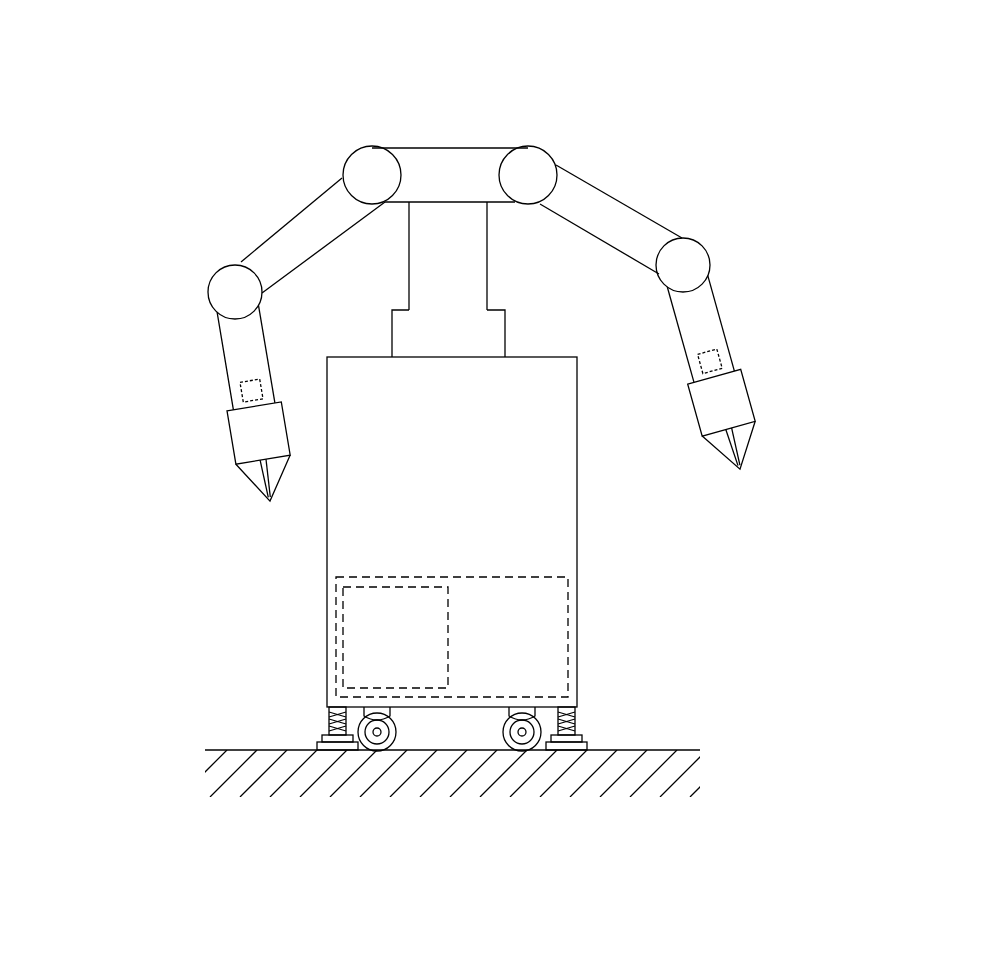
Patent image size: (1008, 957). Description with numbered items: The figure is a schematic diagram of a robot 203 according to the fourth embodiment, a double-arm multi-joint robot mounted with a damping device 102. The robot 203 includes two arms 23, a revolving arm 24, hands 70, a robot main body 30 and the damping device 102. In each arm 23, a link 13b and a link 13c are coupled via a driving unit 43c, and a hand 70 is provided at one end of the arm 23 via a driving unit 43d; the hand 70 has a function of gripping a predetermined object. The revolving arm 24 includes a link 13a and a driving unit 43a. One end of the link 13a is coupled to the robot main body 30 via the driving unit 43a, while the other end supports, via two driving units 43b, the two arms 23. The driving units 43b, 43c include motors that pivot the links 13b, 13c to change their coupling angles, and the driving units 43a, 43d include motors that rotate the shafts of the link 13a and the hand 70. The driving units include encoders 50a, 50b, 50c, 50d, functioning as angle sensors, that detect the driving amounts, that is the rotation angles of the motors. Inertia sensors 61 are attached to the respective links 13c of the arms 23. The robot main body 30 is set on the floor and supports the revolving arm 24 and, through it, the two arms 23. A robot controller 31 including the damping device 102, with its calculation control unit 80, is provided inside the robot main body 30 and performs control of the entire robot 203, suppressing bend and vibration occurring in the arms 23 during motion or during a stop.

The robot 203 is at (206, 74).
The arm 23 is at (201, 211).
The driving unit 43b is at (363, 163).
The encoder 50b is at (480, 146).
The link 13b is at (307, 232).
The driving unit 43c is at (227, 290).
The encoder 50c is at (431, 279).
The link 13a is at (473, 248).
The revolving arm 24 is at (563, 238).
The driving unit 43a is at (490, 340).
The encoder 50a is at (490, 325).
The link 13c is at (715, 342).
The driving unit 43d is at (737, 408).
The encoder 50d is at (541, 412).
The hand 70 is at (747, 433).
The inertia sensor 61 is at (423, 389).
The calculation control unit 80 is at (372, 630).
The robot main body 30 is at (553, 510).
The robot controller 31 is at (533, 642).
The damping device 102 is at (117, 333).